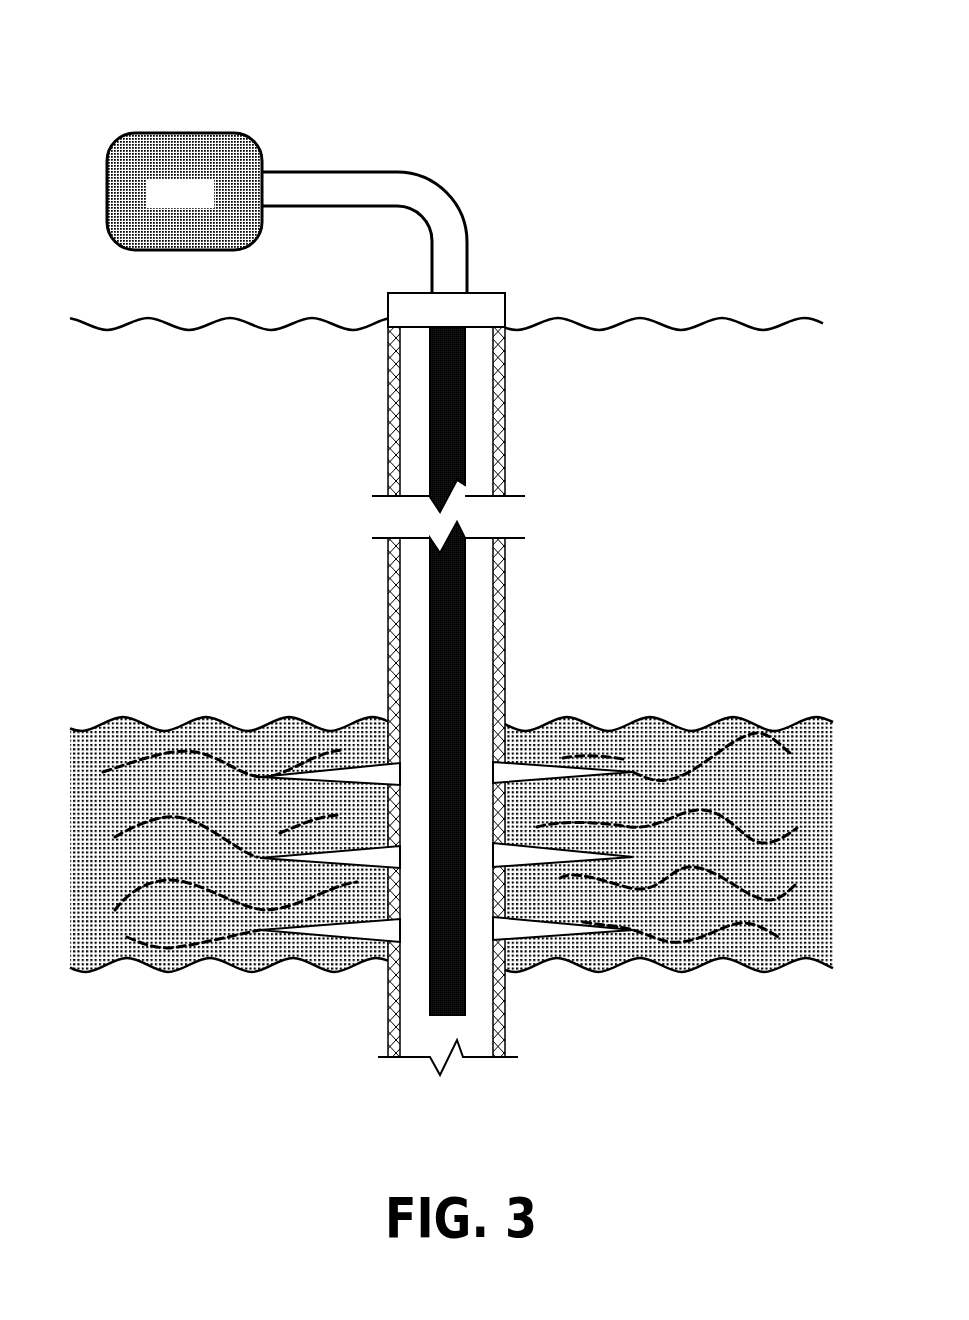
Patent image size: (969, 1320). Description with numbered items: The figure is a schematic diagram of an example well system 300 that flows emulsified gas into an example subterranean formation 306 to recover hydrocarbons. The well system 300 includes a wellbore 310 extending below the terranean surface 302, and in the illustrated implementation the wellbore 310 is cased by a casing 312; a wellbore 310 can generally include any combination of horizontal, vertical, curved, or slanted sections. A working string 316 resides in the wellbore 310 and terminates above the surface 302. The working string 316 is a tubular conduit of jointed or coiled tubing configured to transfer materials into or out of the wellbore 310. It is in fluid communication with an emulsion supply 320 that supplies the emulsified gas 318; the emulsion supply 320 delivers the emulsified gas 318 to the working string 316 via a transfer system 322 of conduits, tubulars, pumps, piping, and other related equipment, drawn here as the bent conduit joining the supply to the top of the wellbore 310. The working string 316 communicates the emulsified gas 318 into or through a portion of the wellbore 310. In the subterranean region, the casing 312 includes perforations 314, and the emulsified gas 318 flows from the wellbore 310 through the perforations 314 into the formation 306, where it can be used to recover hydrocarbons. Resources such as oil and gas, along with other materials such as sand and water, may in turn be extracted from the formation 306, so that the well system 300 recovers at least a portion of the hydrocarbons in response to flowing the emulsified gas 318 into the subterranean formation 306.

The well system 300 is at (161, 52).
The terranean surface 302 is at (565, 317).
The subterranean formation 306 is at (747, 778).
The wellbore 310 is at (475, 593).
The casing 312 is at (498, 372).
The perforations 314 is at (517, 778).
The working string 316 is at (432, 453).
The emulsified gas 318 is at (180, 194).
The emulsion supply 320 is at (123, 135).
The transfer system 322 is at (443, 188).